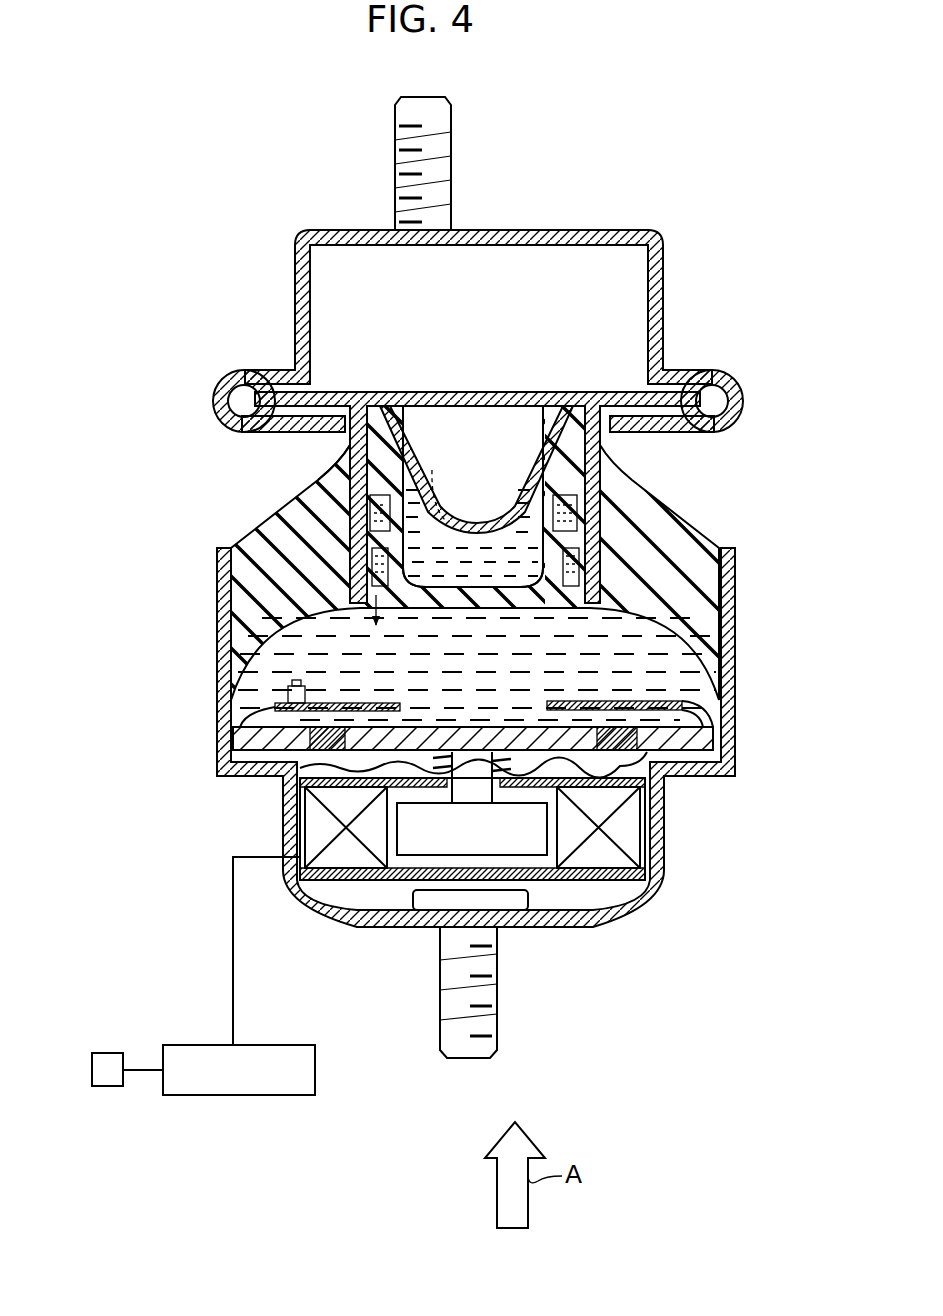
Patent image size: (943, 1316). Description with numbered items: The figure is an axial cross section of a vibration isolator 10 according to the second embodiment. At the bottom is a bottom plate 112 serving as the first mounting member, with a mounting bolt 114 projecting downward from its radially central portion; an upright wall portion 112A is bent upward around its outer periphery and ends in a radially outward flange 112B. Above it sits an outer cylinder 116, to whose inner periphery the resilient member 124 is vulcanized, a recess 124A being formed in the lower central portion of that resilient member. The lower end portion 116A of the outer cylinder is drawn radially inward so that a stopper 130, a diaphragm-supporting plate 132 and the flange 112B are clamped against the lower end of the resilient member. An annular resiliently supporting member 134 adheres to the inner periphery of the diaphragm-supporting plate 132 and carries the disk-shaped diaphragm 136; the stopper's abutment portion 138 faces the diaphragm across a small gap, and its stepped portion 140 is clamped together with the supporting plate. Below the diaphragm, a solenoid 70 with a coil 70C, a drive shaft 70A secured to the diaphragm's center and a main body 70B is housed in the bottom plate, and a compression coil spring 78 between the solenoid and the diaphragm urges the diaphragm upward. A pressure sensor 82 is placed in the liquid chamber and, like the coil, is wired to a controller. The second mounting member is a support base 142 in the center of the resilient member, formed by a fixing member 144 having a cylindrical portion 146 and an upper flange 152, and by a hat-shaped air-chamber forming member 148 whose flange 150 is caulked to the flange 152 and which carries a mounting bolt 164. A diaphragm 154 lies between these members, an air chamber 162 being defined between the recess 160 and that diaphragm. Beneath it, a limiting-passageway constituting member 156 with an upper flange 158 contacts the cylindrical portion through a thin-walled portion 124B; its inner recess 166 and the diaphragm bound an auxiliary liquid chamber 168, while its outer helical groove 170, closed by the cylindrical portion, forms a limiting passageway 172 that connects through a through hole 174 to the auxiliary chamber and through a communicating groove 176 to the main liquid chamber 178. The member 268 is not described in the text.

The vibration isolator 10 is at (622, 152).
The mounting bolt 164 is at (462, 146).
The air-chamber forming member 148 is at (288, 272).
The recess 160 is at (652, 292).
The air chamber 162 is at (497, 298).
The support base 142 is at (208, 392).
The flange 150 is at (278, 372).
The flange 152 is at (240, 410).
The fixing member 144 is at (300, 440).
The cylindrical portion 146 is at (332, 470).
The resilient member 124 is at (250, 542).
The recess 124A is at (255, 670).
The thin-walled portion 124B is at (625, 472).
The limiting-passageway constituting member 156 is at (560, 420).
The diaphragm 154 is at (345, 392).
The flange 158 is at (608, 395).
The auxiliary liquid chamber 168 is at (510, 548).
The recess 166 is at (470, 585).
The through hole 174 is at (612, 512).
The limiting passageway 172 is at (590, 525).
The communicating groove 176 is at (378, 632).
The helical groove 170 is at (619, 646).
The main liquid chamber 178 is at (554, 688).
The outer cylinder 116 is at (736, 590).
The stopper 130 is at (730, 648).
The lower end portion 116A is at (705, 772).
The flange 112B is at (680, 780).
The upright wall portion 112A is at (660, 840).
The lower housing step 268 is at (660, 858).
The bottom plate 112 is at (572, 930).
The diaphragm 136 is at (445, 727).
The diaphragm-supporting plate 132 is at (650, 730).
The abutment portion 138 is at (338, 703).
The resiliently supporting member 134 is at (600, 722).
The stepped portion 140 is at (712, 712).
The pressure sensor 82 is at (285, 698).
The compression coil spring 78 is at (283, 790).
The solenoid 70 is at (592, 896).
The main body 70B is at (540, 882).
The drive shaft 70A is at (420, 875).
The coil 70C is at (342, 905).
The mounting bolt 114 is at (440, 1013).